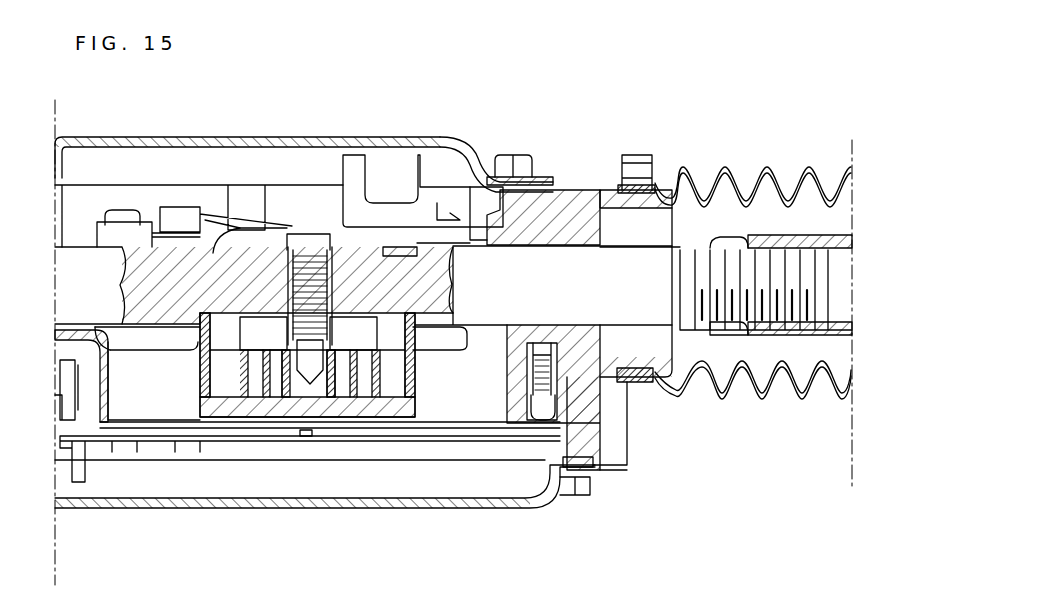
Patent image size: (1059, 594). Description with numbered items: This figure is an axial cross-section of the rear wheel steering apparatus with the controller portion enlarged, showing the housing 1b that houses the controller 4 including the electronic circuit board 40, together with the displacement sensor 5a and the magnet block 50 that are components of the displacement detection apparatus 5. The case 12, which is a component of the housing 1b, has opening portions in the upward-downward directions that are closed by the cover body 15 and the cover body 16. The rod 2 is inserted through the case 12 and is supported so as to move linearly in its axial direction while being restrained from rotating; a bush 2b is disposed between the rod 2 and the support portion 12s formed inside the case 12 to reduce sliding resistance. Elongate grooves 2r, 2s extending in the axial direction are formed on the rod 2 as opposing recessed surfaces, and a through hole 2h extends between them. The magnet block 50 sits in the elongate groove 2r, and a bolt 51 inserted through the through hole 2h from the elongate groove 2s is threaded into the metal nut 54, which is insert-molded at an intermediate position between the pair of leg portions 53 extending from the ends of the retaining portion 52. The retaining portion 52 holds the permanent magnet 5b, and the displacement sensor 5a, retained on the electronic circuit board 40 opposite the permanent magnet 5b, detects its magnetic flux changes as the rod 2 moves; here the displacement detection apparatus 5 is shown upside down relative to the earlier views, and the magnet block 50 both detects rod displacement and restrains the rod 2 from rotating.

The housing 1b is at (152, 136).
The elongate groove 2s is at (213, 253).
The through hole 2h is at (293, 255).
The bolt 51 is at (310, 243).
The controller 4 is at (441, 165).
The cover body 15 is at (468, 140).
The rod 2 is at (560, 262).
The case 12 is at (598, 197).
The bush 2b is at (583, 243).
The support portion 12s is at (590, 428).
The leg portions 53 is at (197, 365).
The elongate groove 2r is at (205, 418).
The permanent magnet 5b is at (230, 415).
The displacement detection apparatus 5 is at (268, 452).
The displacement sensor 5a is at (307, 440).
The nut 54 is at (340, 400).
The electronic circuit board 40 is at (405, 441).
The retaining portion 52 is at (400, 395).
The magnet block 50 is at (426, 396).
The cover body 16 is at (530, 505).